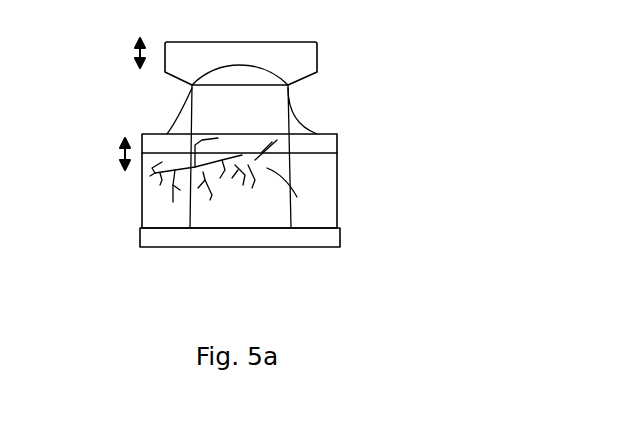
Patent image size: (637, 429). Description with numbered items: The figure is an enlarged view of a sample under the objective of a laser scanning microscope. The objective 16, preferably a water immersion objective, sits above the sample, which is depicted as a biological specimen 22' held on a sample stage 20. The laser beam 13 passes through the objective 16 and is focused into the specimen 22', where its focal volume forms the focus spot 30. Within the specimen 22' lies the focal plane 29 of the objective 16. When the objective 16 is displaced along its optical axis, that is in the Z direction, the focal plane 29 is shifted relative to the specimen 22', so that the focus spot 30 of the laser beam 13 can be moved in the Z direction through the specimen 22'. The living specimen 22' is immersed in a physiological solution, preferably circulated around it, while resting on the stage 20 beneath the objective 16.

The objective 16 is at (319, 63).
The laser beam 13 is at (197, 112).
The biological specimen 22' is at (194, 181).
The focal plane 29 is at (338, 153).
The sample stage 20 is at (157, 248).
The focus spot 30 is at (242, 155).